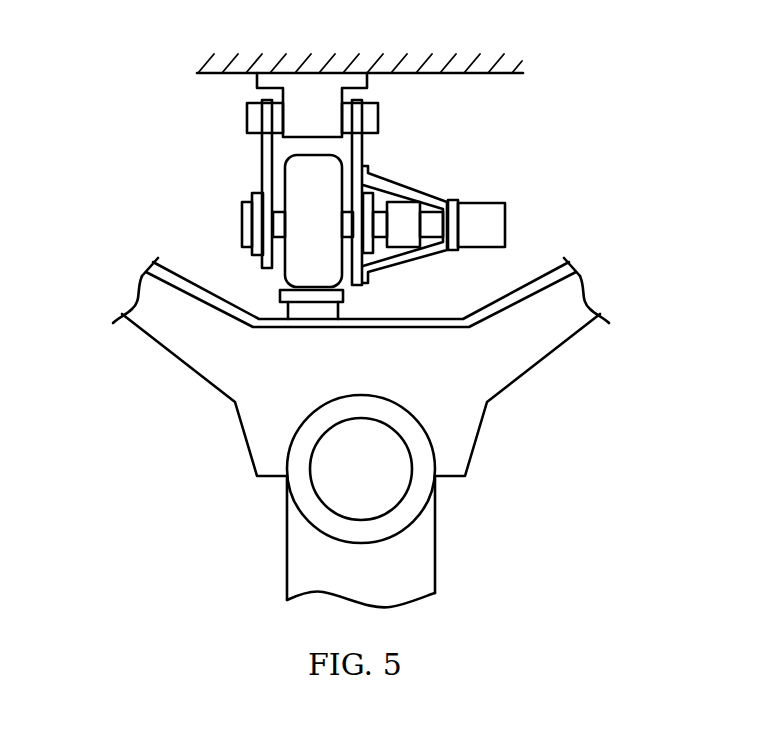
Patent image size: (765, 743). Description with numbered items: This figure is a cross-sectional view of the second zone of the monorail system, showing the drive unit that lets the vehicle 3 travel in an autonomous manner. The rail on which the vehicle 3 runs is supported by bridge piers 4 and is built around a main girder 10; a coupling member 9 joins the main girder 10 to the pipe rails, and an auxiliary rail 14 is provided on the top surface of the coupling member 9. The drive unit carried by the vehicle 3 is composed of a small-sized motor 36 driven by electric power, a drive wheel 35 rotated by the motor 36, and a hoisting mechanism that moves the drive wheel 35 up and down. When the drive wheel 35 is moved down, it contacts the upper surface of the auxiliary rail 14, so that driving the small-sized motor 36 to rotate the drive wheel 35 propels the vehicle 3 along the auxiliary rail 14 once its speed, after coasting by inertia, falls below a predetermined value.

The vehicle 3 is at (420, 58).
The bridge pier 4 is at (402, 573).
The coupling member 9 is at (282, 370).
The main girder 10 is at (360, 462).
The auxiliary rail 14 is at (308, 288).
The drive wheel 35 is at (305, 227).
The small-sized motor 36 is at (478, 223).